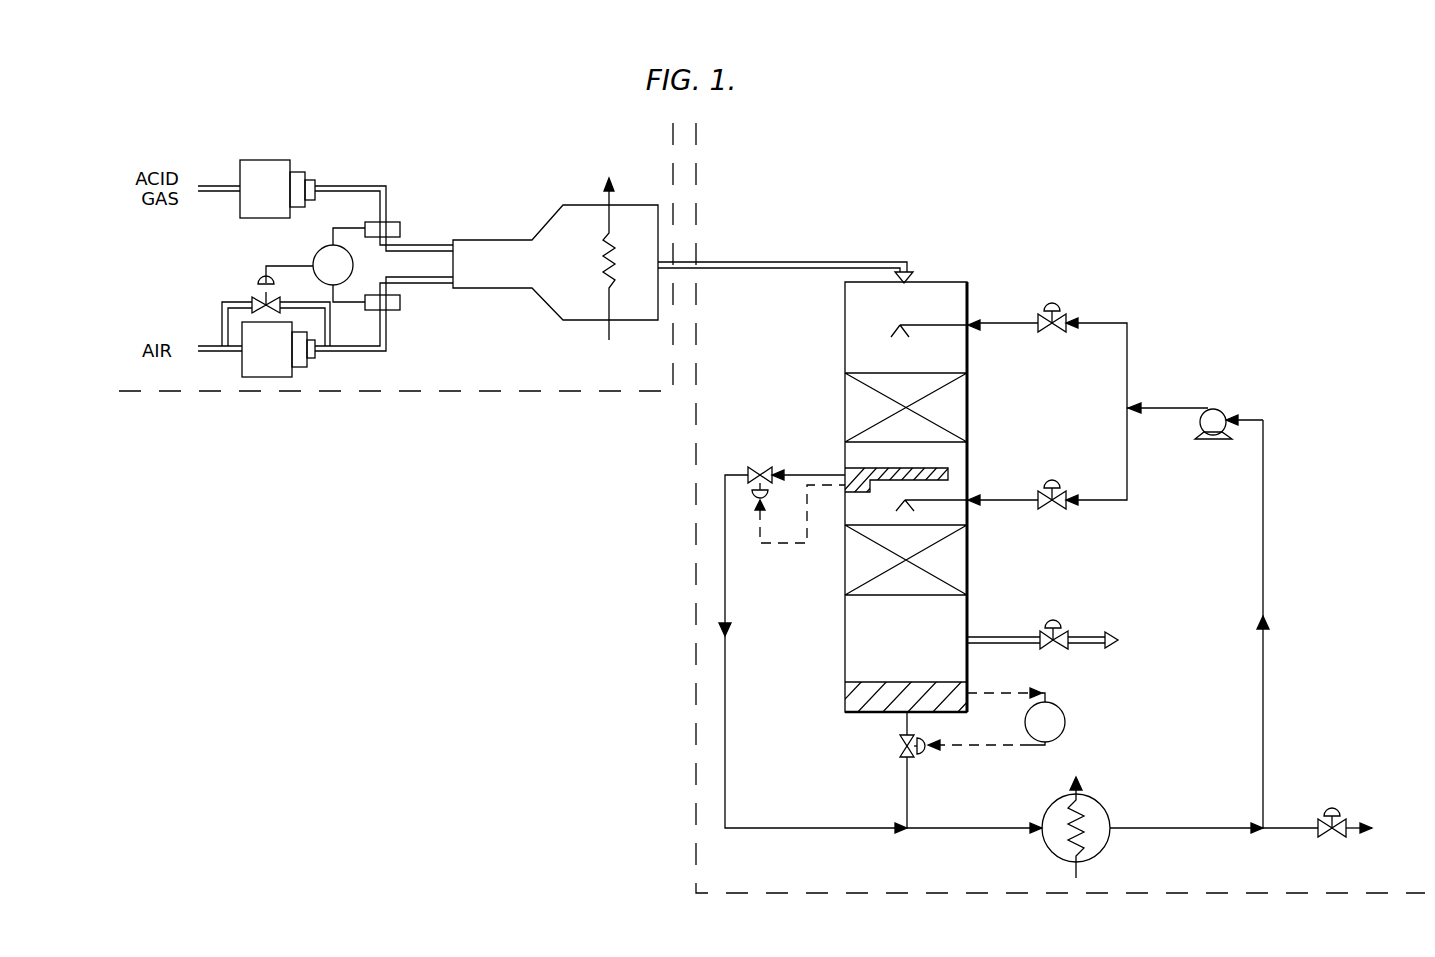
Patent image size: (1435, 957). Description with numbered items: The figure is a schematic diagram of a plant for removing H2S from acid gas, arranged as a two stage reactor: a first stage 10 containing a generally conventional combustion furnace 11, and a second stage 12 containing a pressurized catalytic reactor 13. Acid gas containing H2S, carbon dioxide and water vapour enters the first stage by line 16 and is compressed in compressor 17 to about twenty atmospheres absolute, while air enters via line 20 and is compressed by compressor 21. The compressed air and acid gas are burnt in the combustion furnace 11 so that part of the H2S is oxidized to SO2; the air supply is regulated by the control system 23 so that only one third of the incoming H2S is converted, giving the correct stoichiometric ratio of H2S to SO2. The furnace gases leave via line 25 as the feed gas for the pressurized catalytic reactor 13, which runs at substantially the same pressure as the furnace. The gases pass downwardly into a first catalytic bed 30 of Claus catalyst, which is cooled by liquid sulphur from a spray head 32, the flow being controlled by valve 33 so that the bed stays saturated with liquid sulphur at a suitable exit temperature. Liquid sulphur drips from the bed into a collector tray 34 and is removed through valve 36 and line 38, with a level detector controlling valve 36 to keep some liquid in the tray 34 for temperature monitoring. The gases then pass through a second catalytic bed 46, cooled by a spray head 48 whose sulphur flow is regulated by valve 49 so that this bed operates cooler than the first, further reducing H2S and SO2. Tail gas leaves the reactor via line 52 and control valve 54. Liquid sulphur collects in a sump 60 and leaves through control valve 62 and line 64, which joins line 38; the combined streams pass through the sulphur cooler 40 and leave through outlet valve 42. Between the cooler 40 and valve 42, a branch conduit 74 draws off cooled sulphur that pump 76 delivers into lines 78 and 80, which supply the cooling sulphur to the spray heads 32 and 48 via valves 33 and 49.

The first stage 10 is at (497, 373).
The combustion furnace 11 is at (592, 310).
The second stage 12 is at (684, 599).
The pressurized catalytic reactor 13 is at (808, 360).
The line 16 is at (228, 185).
The compressor 17 is at (288, 162).
The line 20 is at (223, 353).
The compressor 21 is at (283, 370).
The control system 23 is at (306, 250).
The line 25 is at (794, 260).
The first catalytic bed 30 is at (852, 405).
The spray head 32 is at (898, 330).
The valve 33 is at (1036, 320).
The collector tray 34 is at (945, 468).
The valve 36 is at (752, 470).
The line 38 is at (729, 665).
The sulphur cooler 40 is at (1110, 818).
The outlet valve 42 is at (1346, 820).
The second catalytic bed 46 is at (855, 575).
The spray head 48 is at (900, 503).
The valve 49 is at (1065, 506).
The line 52 is at (978, 636).
The control valve 54 is at (1071, 636).
The sump 60 is at (848, 704).
The control valve 62 is at (898, 749).
The line 64 is at (905, 800).
The branch conduit 74 is at (1266, 591).
The pump 76 is at (1222, 410).
The line 78 is at (1131, 363).
The line 80 is at (1129, 489).